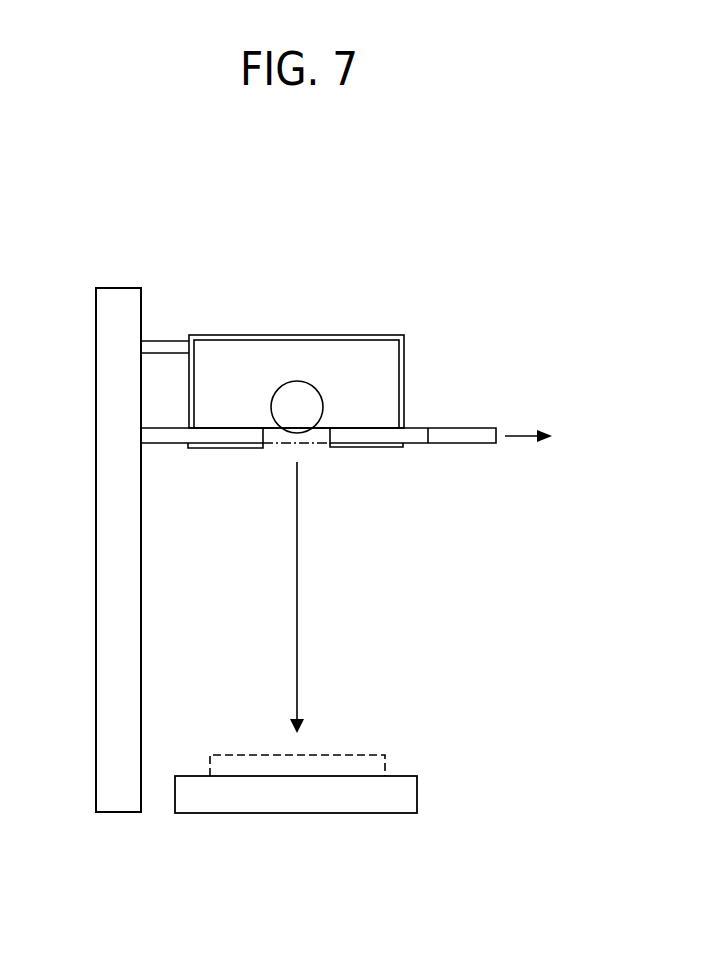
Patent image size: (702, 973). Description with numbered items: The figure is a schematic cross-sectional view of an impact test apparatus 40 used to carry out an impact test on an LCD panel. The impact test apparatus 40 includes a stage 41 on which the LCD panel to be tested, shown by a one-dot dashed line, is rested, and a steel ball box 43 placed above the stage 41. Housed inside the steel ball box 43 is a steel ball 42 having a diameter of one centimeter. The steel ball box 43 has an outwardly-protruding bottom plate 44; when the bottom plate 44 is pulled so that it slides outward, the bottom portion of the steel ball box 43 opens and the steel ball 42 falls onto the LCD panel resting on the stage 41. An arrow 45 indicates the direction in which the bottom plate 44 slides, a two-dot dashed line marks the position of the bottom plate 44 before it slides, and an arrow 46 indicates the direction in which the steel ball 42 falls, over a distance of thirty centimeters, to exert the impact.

The impact test apparatus 40 is at (128, 240).
The stage 41 is at (413, 796).
The steel ball 42 is at (310, 396).
The steel ball box 43 is at (342, 332).
The bottom plate 44 is at (447, 438).
The arrow indicating bottom plate sliding direction 45 is at (523, 432).
The arrow indicating steel ball falling direction 46 is at (297, 590).